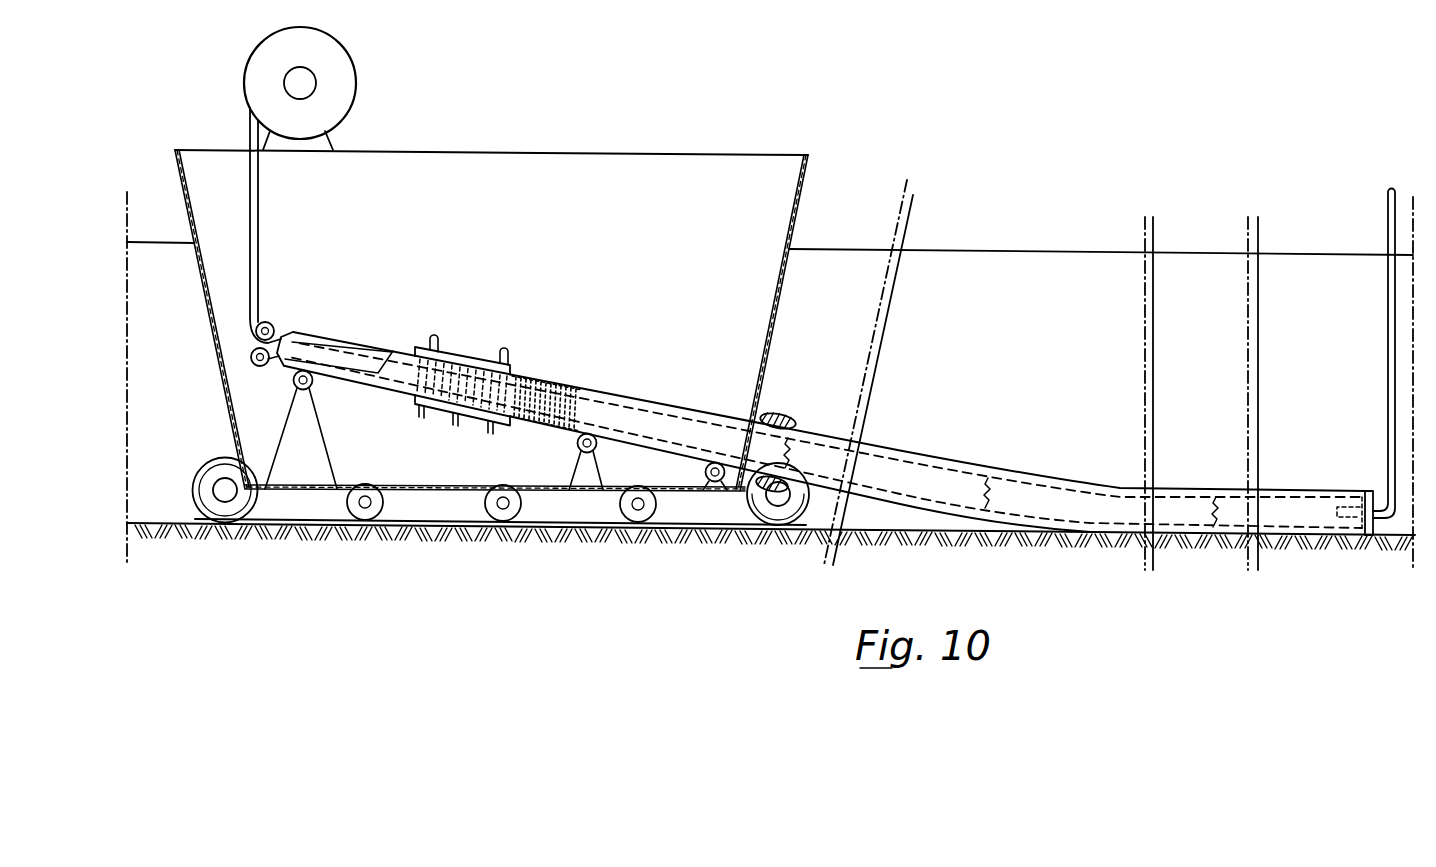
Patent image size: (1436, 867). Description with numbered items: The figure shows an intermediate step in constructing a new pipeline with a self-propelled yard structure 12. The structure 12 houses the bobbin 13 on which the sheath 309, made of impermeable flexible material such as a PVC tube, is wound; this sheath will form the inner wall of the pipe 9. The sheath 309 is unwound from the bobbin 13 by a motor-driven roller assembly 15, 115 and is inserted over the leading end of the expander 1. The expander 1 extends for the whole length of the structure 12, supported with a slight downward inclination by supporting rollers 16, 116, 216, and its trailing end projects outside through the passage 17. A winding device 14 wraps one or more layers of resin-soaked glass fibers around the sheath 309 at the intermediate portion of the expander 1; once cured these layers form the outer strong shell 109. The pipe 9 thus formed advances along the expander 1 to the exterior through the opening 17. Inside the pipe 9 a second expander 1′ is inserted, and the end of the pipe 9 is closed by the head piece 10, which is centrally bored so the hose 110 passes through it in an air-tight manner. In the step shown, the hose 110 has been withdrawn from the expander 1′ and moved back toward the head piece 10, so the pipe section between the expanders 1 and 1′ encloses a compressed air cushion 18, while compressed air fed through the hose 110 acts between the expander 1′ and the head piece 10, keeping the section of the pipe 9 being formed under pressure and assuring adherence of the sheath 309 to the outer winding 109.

The expander 1 is at (825, 412).
The second expander 1′ is at (1074, 485).
The pipe 9 is at (972, 466).
The head piece 10 is at (1368, 490).
The yard structure 12 is at (170, 180).
The bobbin 13 is at (367, 83).
The winding device 14 is at (476, 339).
The motor-driven roller 15 is at (268, 322).
The supporting roller 16 is at (312, 387).
The passage 17 is at (792, 416).
The compressed air cushion 18 is at (904, 456).
The outer strong shell 109 is at (528, 368).
The hose 110 is at (1386, 393).
The motor-driven roller 115 is at (252, 364).
The supporting roller 116 is at (578, 447).
The supporting roller 216 is at (706, 476).
The sheath 309 is at (262, 214).